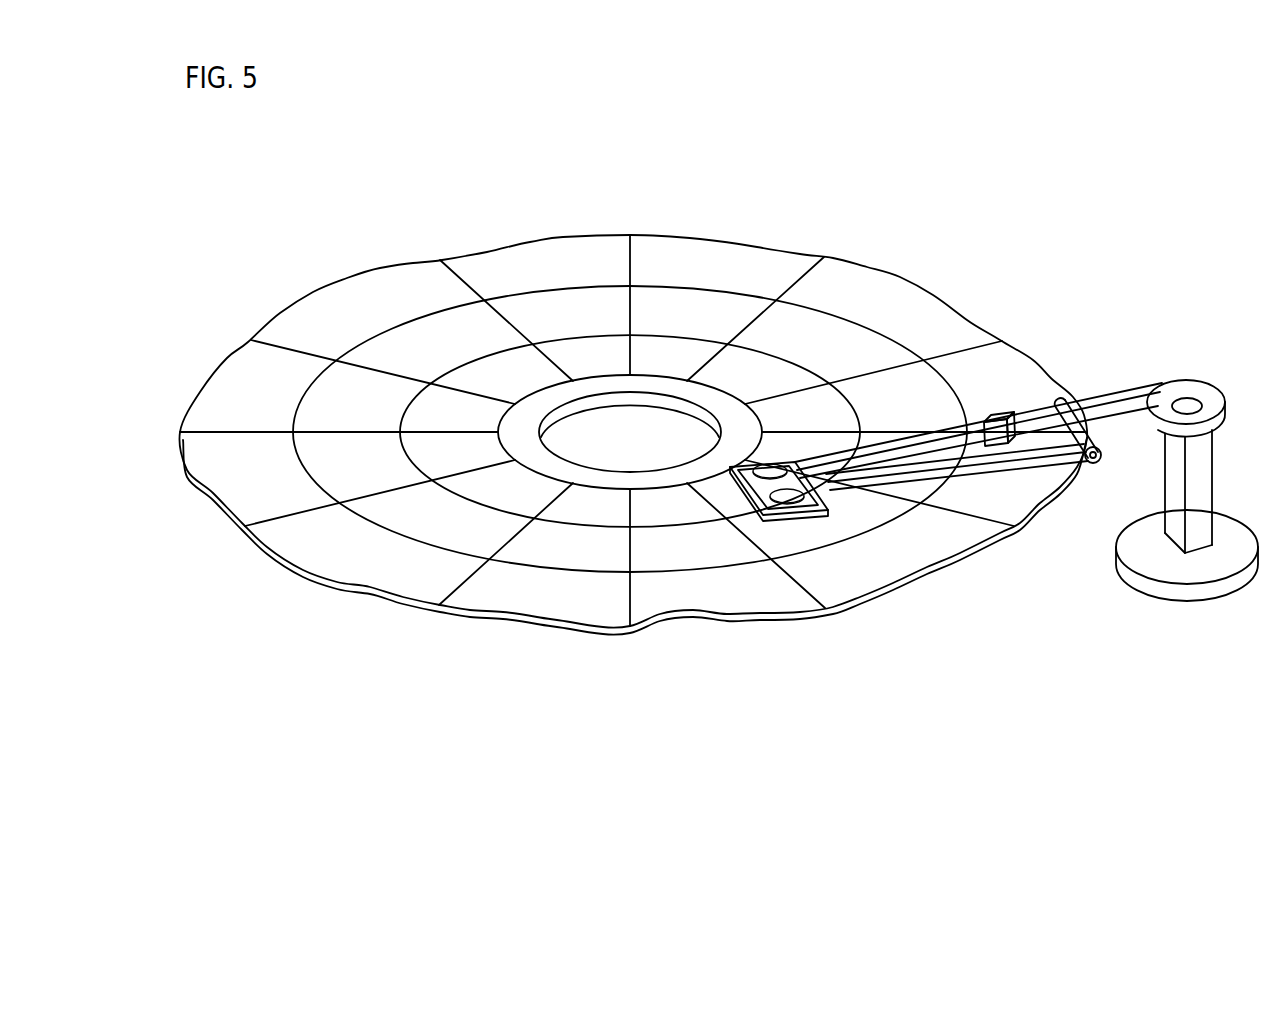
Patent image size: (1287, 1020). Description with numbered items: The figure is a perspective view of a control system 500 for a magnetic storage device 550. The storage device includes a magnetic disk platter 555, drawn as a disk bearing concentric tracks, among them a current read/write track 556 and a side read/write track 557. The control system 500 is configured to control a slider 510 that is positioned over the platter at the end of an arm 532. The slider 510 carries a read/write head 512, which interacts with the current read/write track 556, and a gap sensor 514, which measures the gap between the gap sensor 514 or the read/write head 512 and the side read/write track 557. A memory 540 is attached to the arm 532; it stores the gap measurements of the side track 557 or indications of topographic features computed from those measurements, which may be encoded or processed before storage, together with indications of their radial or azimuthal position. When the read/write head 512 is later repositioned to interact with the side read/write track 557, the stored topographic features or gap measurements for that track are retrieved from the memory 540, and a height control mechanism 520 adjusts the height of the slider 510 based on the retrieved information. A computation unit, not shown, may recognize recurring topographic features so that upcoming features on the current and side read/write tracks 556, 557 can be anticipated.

The control system 500 is at (1191, 620).
The slider 510 is at (856, 486).
The read/write head 512 is at (768, 468).
The gap sensor 514 is at (793, 508).
The height control mechanism 520 is at (1097, 466).
The arm 532 is at (1143, 387).
The memory 540 is at (1003, 414).
The magnetic storage device 550 is at (633, 499).
The magnetic disk platter 555 is at (757, 248).
The current read/write track 556 is at (577, 525).
The side read/write track 557 is at (673, 542).